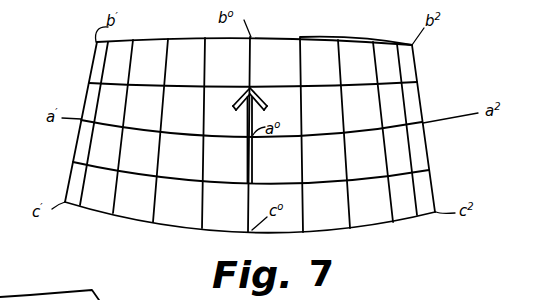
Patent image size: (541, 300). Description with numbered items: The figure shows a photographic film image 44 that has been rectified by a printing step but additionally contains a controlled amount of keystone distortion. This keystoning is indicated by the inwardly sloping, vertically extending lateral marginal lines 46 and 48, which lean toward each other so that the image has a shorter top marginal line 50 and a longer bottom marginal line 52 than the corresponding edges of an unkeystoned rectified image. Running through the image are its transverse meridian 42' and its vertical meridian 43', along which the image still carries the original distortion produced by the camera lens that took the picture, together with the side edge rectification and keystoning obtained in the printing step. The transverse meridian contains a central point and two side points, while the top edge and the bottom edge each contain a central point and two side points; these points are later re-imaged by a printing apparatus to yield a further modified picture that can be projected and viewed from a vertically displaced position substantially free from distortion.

The transverse meridian 42' is at (428, 132).
The vertical meridian 43' is at (267, 96).
The film image 44 is at (98, 145).
The lateral marginal line 46 is at (408, 104).
The lateral marginal line 48 is at (90, 96).
The top marginal line 50 is at (318, 38).
The bottom marginal line 52 is at (128, 221).